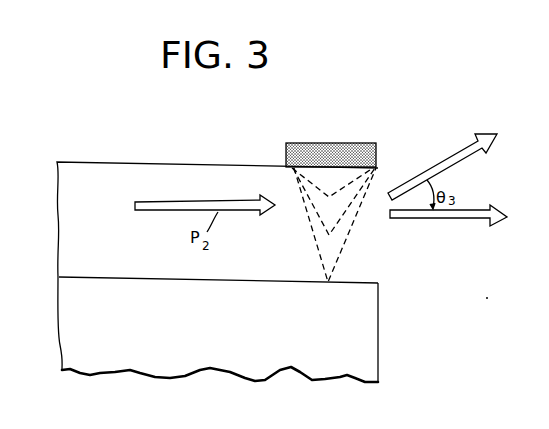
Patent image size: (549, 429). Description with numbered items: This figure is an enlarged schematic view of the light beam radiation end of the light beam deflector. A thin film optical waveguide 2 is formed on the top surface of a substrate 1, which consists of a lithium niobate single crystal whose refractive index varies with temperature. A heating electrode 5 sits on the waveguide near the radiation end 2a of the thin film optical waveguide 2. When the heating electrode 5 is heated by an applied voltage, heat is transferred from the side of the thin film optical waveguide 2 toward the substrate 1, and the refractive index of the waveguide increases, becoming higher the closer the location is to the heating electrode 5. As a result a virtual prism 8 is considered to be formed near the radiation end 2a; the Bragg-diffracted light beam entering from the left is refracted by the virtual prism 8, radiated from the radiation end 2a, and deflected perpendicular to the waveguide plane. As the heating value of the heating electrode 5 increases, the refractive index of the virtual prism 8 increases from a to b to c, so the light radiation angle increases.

The substrate 1 is at (218, 351).
The thin film optical waveguide 2 is at (119, 175).
The radiation end 2a is at (373, 268).
The heating electrode 5 is at (331, 143).
The virtual prism 8 is at (292, 170).